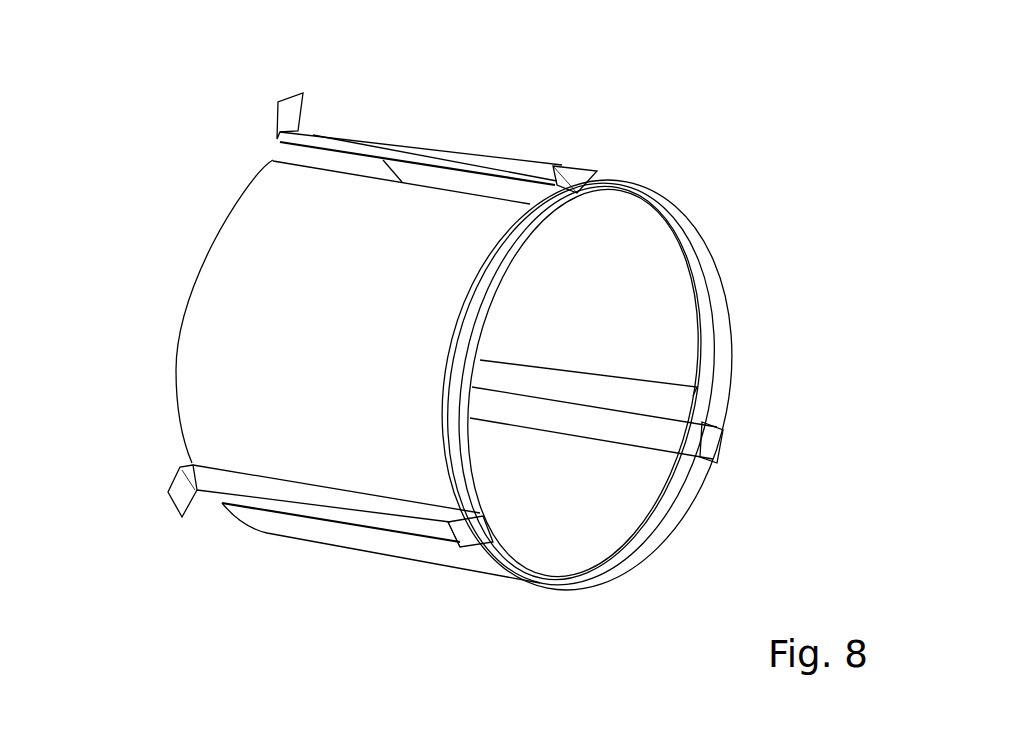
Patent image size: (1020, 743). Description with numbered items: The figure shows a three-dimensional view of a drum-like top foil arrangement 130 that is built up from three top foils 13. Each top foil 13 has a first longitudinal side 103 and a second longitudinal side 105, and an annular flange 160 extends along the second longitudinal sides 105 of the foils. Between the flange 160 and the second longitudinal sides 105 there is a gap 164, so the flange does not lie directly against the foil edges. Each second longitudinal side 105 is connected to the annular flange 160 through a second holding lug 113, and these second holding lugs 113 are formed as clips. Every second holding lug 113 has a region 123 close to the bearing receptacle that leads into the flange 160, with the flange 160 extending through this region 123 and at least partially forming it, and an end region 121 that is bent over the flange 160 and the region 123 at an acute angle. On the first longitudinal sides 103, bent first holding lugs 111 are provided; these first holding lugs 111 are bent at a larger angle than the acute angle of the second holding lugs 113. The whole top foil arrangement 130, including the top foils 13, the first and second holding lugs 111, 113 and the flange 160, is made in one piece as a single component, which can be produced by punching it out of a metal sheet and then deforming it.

The first longitudinal side 103 is at (187, 280).
The top foil 13 is at (210, 357).
The second longitudinal side 105 is at (700, 332).
The annular flange 160 is at (677, 508).
The gap 164 is at (627, 552).
The region close to the bearing receptacle 123 is at (550, 168).
The end region 121 is at (570, 164).
The second holding lug 113 is at (590, 170).
The first holding lug 111 is at (306, 93).
The top foil arrangement 130 is at (422, 120).